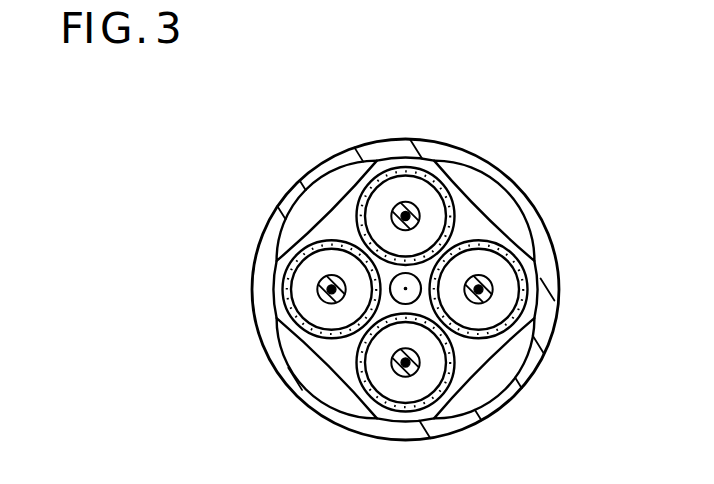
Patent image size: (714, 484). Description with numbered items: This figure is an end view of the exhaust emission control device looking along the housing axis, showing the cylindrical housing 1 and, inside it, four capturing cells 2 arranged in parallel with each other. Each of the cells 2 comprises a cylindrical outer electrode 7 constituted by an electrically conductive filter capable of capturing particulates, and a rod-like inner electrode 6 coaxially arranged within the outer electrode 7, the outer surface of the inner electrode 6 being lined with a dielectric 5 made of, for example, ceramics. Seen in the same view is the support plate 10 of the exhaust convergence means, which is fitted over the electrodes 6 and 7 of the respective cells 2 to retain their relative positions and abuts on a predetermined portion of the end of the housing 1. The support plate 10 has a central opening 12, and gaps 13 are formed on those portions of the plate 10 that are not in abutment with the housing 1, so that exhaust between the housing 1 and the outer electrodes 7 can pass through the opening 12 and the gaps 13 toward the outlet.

The cylindrical housing 1 is at (488, 160).
The capturing cells 2 is at (378, 157).
The dielectric 5 is at (317, 283).
The inner electrode 6 is at (318, 295).
The outer electrode 7 is at (290, 310).
The support plate 10 is at (343, 350).
The central opening 12 is at (406, 280).
The gaps 13 is at (320, 207).